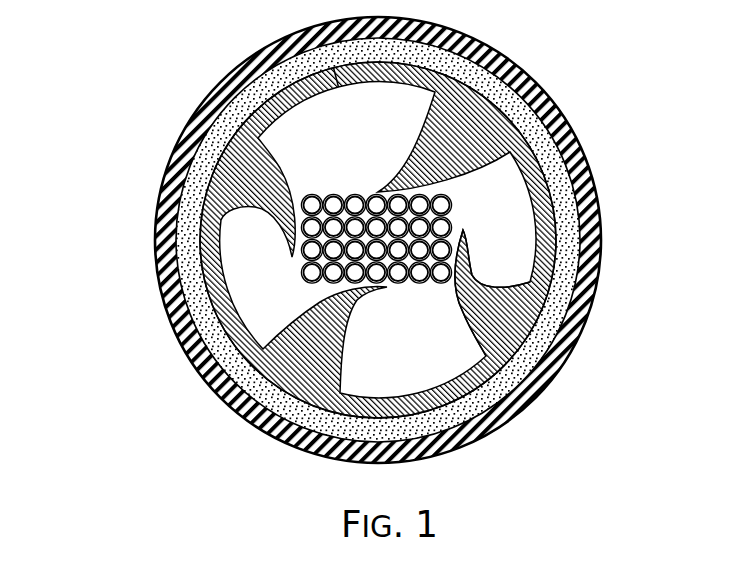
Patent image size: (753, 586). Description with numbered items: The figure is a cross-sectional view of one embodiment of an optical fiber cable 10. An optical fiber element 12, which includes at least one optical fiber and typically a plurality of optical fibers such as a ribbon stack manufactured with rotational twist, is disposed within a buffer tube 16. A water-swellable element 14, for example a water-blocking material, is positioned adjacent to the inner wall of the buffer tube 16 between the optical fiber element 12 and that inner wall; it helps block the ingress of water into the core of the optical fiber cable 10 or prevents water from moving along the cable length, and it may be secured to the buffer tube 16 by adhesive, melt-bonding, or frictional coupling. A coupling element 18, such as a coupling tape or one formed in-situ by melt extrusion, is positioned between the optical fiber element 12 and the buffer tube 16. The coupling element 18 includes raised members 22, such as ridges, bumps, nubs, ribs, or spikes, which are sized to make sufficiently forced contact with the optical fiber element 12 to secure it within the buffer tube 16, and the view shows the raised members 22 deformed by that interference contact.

The optical fiber cable 10 is at (148, 362).
The optical fiber element 12 is at (353, 196).
The water-swellable element 14 is at (563, 182).
The buffer tube 16 is at (568, 126).
The coupling element 18 is at (545, 233).
The raised members 22 is at (480, 302).